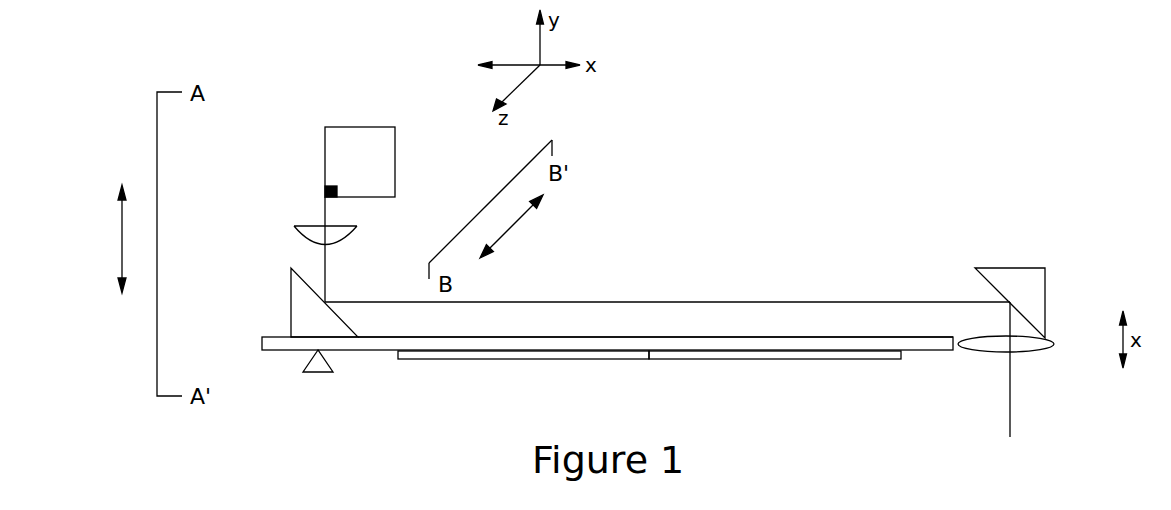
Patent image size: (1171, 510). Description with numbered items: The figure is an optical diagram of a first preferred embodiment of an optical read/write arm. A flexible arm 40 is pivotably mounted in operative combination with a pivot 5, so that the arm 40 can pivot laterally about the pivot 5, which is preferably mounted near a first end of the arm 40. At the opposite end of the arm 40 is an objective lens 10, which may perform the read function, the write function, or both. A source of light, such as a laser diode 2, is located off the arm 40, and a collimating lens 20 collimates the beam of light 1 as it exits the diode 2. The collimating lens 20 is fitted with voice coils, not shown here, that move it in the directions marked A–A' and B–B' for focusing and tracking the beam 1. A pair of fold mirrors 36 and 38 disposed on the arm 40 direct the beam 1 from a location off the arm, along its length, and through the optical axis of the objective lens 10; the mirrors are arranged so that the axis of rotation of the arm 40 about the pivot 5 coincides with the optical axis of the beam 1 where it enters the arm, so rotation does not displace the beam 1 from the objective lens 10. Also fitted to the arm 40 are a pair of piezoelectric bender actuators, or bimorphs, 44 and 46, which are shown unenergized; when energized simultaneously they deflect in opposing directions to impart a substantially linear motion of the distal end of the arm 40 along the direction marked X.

The beam of light 1 is at (598, 302).
The laser diode 2 is at (382, 149).
The pivot 5 is at (316, 366).
The objective lens 10 is at (1045, 345).
The collimating lens 20 is at (337, 232).
The fold mirror 36 is at (300, 311).
The fold mirror 38 is at (1035, 283).
The flexible arm 40 is at (422, 344).
The piezoelectric bender actuator 44 is at (507, 359).
The piezoelectric bender actuator 46 is at (775, 359).